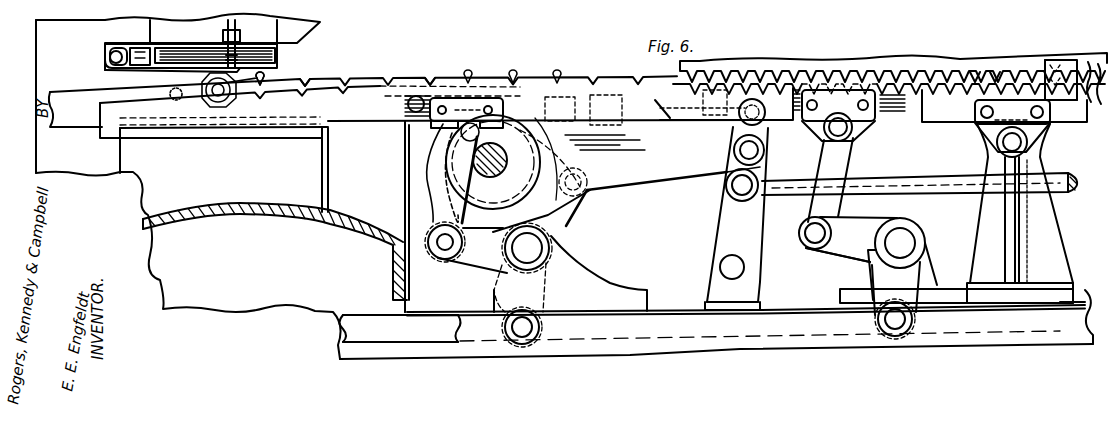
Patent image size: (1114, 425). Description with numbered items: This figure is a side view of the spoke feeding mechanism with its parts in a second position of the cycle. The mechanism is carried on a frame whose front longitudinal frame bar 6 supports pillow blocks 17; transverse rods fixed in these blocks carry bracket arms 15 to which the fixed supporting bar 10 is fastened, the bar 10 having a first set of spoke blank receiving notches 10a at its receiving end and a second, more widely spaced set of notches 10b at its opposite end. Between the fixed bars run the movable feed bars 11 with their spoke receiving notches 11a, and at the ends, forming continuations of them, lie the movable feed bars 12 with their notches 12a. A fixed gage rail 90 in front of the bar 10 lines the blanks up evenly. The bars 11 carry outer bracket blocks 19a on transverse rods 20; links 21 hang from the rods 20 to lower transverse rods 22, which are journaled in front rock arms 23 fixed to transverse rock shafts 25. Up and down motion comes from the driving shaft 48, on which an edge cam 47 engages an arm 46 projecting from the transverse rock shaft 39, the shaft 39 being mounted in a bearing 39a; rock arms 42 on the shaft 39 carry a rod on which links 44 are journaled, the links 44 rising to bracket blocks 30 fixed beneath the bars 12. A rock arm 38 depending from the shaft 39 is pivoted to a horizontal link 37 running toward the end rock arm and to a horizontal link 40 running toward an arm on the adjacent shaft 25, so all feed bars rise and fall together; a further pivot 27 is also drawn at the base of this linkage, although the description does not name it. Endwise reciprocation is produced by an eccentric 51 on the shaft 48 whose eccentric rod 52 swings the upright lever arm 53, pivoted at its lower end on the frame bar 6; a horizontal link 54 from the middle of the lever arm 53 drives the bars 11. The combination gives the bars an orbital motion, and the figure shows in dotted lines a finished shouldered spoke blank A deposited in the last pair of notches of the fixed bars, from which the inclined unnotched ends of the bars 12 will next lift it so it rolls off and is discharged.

The front longitudinal frame bar 6 is at (1047, 316).
The fixed supporting bar 10 is at (952, 108).
The spoke blank receiving notches 10a is at (995, 82).
The spoke blank receiving notches 10b is at (655, 135).
The movable feed bar 11 is at (800, 72).
The spoke receiving notches 11a is at (845, 80).
The movable feed bar 12 is at (365, 78).
The spoke blank receiving notches 12a is at (305, 85).
The bracket arm 15 is at (1012, 112).
The pillow block 17 is at (1020, 213).
The outer bracket block 19a is at (858, 133).
The transverse rod 20 is at (825, 133).
The link 21 is at (815, 207).
The transverse rod 22 is at (821, 257).
The front rock arm 23 is at (848, 239).
The transverse rock shaft 25 is at (902, 259).
The pivot 27 is at (963, 332).
The bracket block 30 is at (455, 125).
The horizontal link 37 is at (400, 328).
The rock arm 38 is at (545, 296).
The transverse rock shaft 39 is at (527, 248).
The bearing 39a is at (585, 258).
The horizontal link 40 is at (768, 335).
The rock arm 42 is at (466, 247).
The link 44 is at (438, 219).
The arm 46 is at (588, 214).
The edge cam 47 is at (405, 176).
The driving shaft 48 is at (512, 155).
The eccentric 51 is at (534, 170).
The eccentric rod 52 is at (673, 174).
The lever arm 53 is at (736, 204).
The horizontal link 54 is at (919, 174).
The gage rail 90 is at (1058, 68).
The shouldered spoke blank A is at (178, 102).